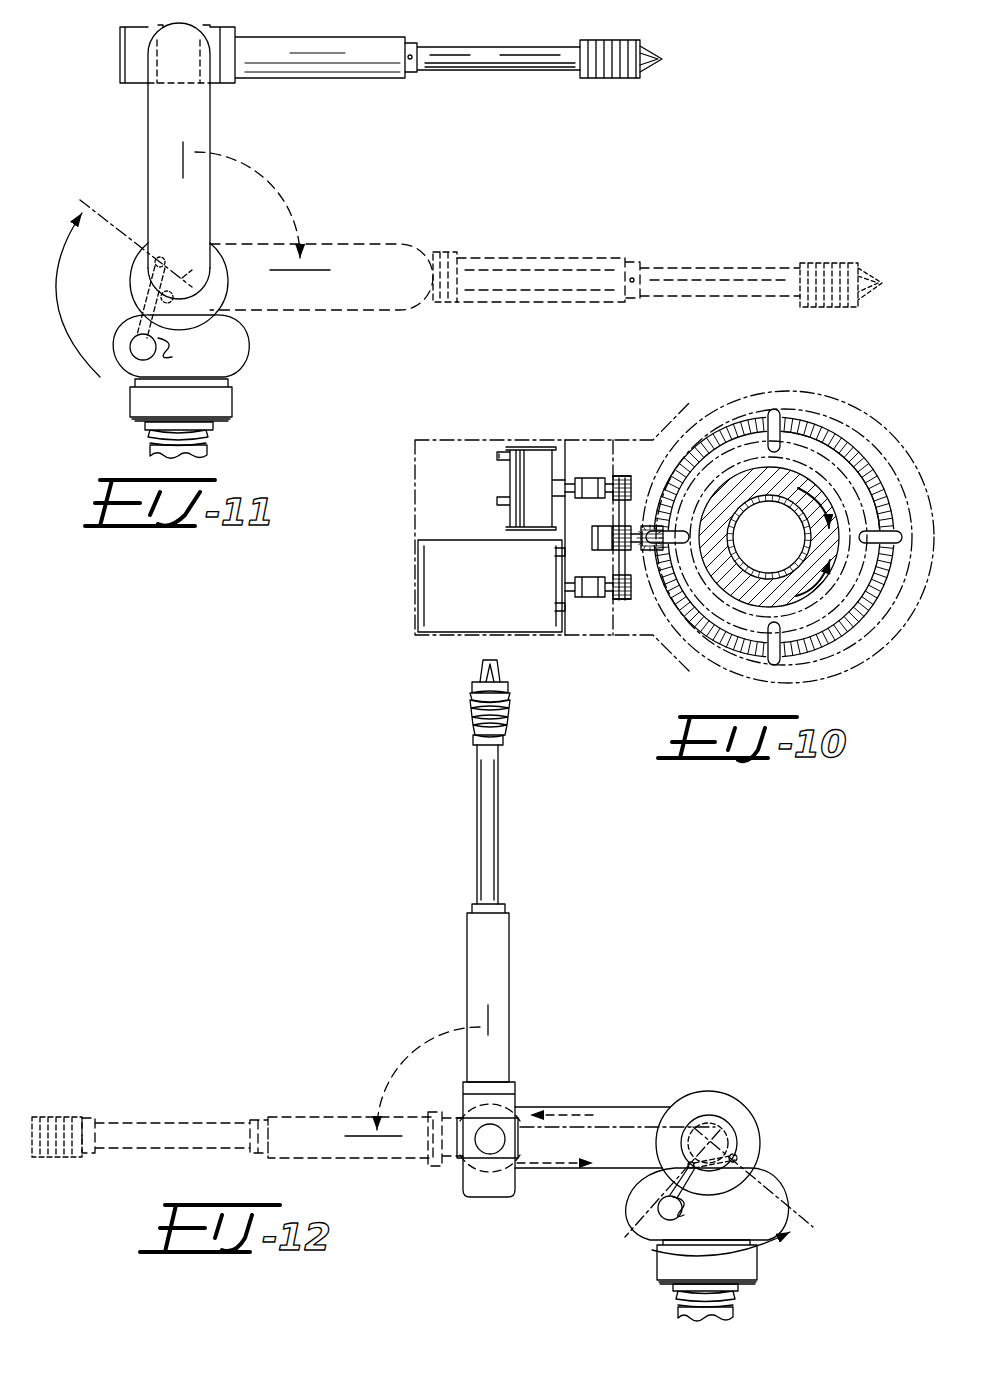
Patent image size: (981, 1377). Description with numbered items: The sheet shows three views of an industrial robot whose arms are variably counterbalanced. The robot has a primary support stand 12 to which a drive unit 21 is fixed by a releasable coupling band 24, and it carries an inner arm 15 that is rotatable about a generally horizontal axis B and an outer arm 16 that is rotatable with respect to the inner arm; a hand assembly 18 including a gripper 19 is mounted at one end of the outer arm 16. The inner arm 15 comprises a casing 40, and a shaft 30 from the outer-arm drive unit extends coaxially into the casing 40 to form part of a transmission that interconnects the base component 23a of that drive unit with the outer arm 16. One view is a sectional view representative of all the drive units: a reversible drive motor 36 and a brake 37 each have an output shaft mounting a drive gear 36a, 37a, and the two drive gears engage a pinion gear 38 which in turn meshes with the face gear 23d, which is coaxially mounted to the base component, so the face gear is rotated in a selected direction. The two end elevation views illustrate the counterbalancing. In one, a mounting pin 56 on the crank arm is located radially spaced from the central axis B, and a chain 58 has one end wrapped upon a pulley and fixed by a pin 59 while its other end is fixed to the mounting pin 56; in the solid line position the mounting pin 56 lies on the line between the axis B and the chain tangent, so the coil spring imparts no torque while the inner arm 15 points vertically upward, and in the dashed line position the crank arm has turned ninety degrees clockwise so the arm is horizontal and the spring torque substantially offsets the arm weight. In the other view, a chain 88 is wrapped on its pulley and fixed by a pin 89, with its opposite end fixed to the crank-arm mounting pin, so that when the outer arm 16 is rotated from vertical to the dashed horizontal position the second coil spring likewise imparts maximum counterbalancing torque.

In FIG. 11, the primary support stand 12 is at (206, 453).
In FIG. 12, the primary support stand 12 is at (733, 1313).
In FIG. 11, the inner arm 15 is at (150, 125).
In FIG. 12, the inner arm 15 is at (571, 1189).
In FIG. 11, the outer arm 16 is at (347, 43).
In FIG. 12, the outer arm 16 is at (513, 940).
In FIG. 11, the hand assembly 18 is at (604, 48).
In FIG. 12, the hand assembly 18 is at (503, 709).
In FIG. 11, the gripper 19 is at (660, 56).
In FIG. 12, the gripper 19 is at (494, 671).
In FIG. 11, the drive unit 21 is at (238, 391).
In FIG. 12, the drive unit 21 is at (764, 1262).
In FIG. 10, the base component 23a is at (733, 488).
In FIG. 10, the face gear 23d is at (806, 428).
In FIG. 11, the releasable coupling band 24 is at (210, 438).
In FIG. 12, the releasable coupling band 24 is at (738, 1299).
In FIG. 10, the shaft 30 is at (812, 545).
In FIG. 10, the drive motor 36 is at (440, 588).
In FIG. 10, the drive gear 36a is at (626, 600).
In FIG. 10, the brake 37 is at (525, 490).
In FIG. 10, the drive gear 37a is at (626, 475).
In FIG. 10, the pinion gear 38 is at (622, 560).
In FIG. 11, the casing 40 is at (205, 150).
In FIG. 12, the casing 40 is at (580, 1105).
In FIG. 11, the mounting pin 56 is at (184, 330).
In FIG. 11, the chain 58 is at (128, 350).
In FIG. 11, the pin 59 is at (160, 347).
In FIG. 12, the chain 88 is at (652, 1210).
In FIG. 12, the pin 89 is at (685, 1212).
In FIG. 11, the horizontal axis B is at (195, 300).
In FIG. 12, the horizontal axis B is at (729, 1109).